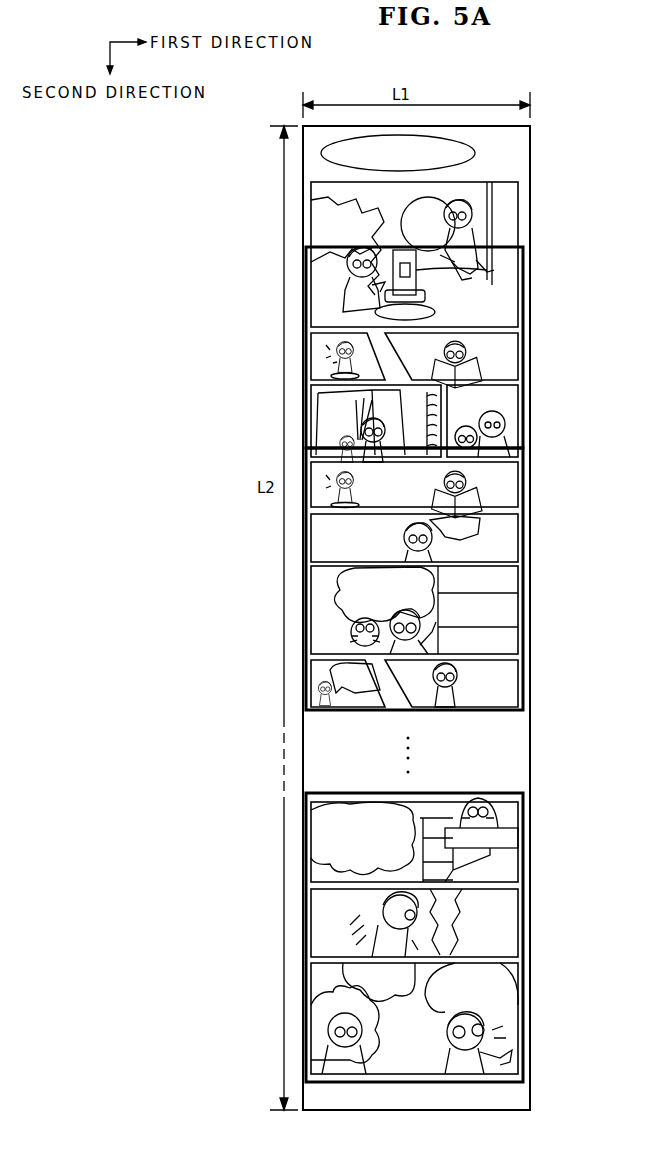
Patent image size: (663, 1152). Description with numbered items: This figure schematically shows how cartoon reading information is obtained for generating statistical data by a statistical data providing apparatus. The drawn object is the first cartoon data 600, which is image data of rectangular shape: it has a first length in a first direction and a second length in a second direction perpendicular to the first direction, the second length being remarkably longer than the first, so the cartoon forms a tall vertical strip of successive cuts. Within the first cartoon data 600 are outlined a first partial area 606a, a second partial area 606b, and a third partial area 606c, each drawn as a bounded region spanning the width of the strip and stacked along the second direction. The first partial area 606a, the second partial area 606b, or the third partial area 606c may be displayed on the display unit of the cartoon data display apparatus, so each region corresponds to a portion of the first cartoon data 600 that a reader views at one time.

The first cartoon data 600 is at (530, 184).
The first partial area 606a is at (523, 356).
The second partial area 606b is at (523, 539).
The third partial area 606c is at (523, 910).